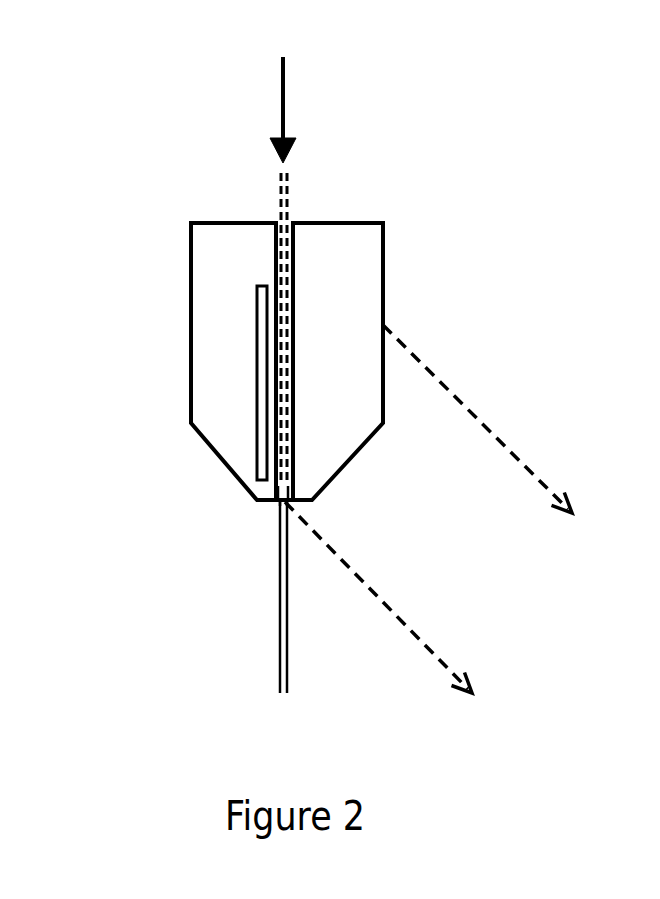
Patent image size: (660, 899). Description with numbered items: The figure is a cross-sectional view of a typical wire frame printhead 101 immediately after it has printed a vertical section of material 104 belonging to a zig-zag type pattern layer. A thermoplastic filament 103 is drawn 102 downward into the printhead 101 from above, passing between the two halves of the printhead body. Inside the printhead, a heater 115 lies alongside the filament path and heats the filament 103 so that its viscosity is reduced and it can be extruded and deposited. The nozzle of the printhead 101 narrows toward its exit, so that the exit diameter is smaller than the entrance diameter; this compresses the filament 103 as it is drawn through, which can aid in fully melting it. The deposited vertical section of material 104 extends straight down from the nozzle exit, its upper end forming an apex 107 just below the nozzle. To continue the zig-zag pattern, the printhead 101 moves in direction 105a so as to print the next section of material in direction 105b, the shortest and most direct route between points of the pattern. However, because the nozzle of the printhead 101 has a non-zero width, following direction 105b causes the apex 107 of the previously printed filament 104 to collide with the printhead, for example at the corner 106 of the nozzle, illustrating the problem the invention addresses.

The wire frame printhead 101 is at (258, 268).
The drawing of filament into the printhead 102 is at (285, 91).
The filament 103 is at (278, 210).
The vertical section of material 104 is at (277, 635).
The printhead movement direction 105a is at (506, 438).
The printing direction of next section 105b is at (411, 615).
The corner of the printhead 106 is at (257, 502).
The apex of previously printed filament 107 is at (277, 505).
The heater 115 is at (253, 368).